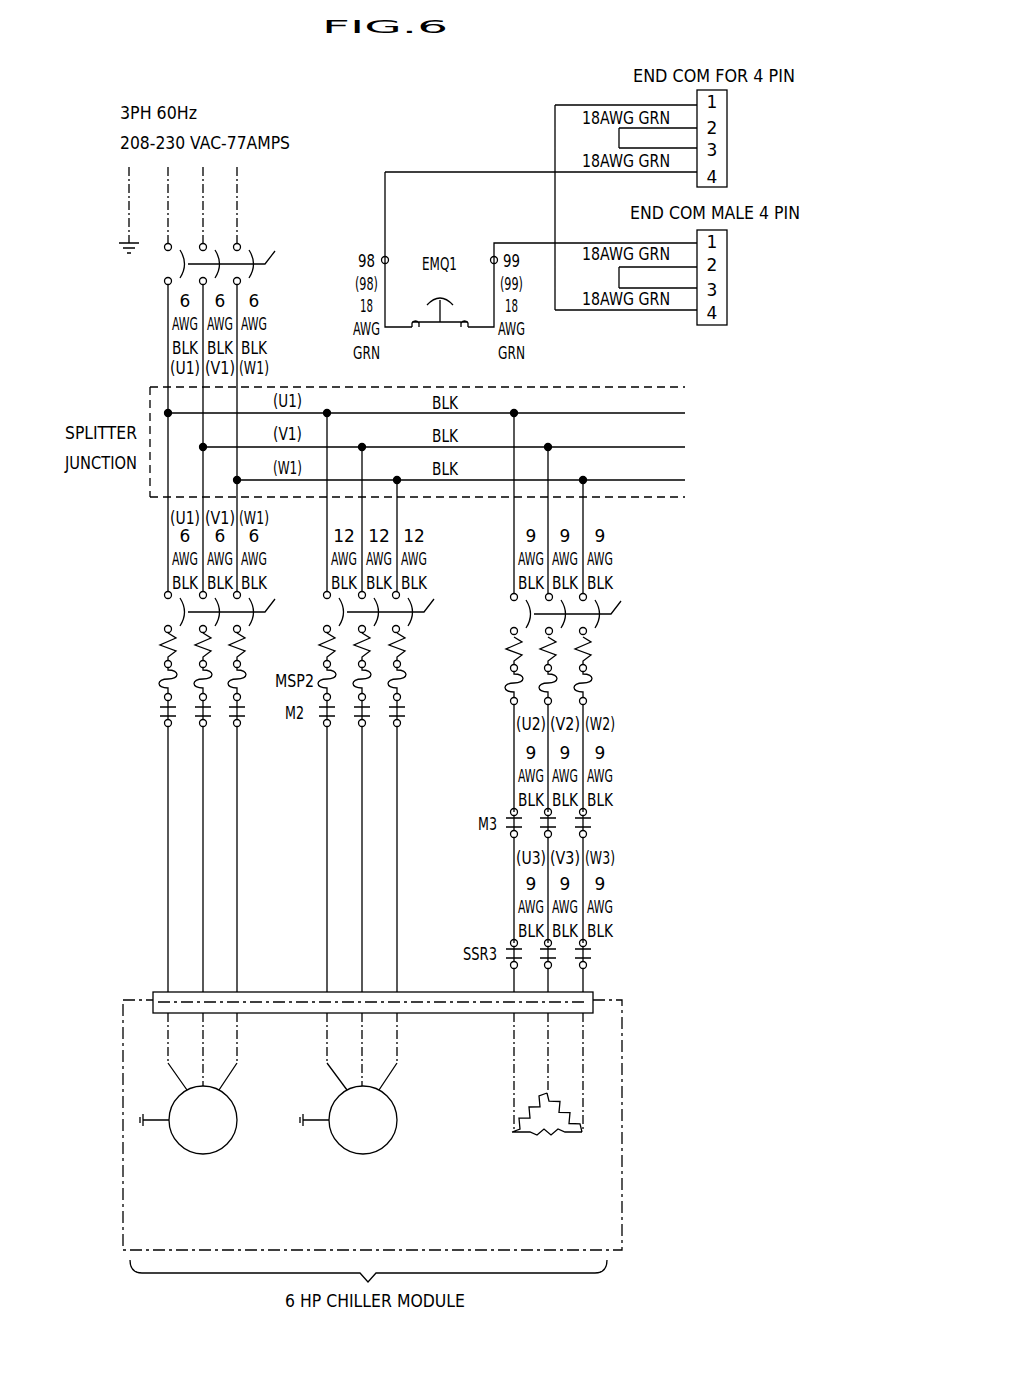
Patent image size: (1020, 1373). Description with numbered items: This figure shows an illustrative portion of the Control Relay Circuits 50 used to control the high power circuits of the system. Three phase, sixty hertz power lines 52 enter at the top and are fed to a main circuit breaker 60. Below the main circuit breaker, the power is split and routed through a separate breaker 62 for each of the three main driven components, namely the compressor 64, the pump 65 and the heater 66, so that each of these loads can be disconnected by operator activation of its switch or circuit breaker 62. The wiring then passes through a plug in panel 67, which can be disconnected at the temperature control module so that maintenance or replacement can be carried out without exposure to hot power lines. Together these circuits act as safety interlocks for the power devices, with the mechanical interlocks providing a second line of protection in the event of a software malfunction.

The Control Relay Circuits 50 is at (625, 585).
The three phase, 60 Hz power lines 52 is at (203, 218).
The main circuit breaker 60 is at (258, 270).
The separate breaker 62 is at (153, 610).
The compressor 64 is at (233, 1104).
The pump 65 is at (397, 1104).
The heater 66 is at (582, 1112).
The plug in panel 67 is at (163, 992).